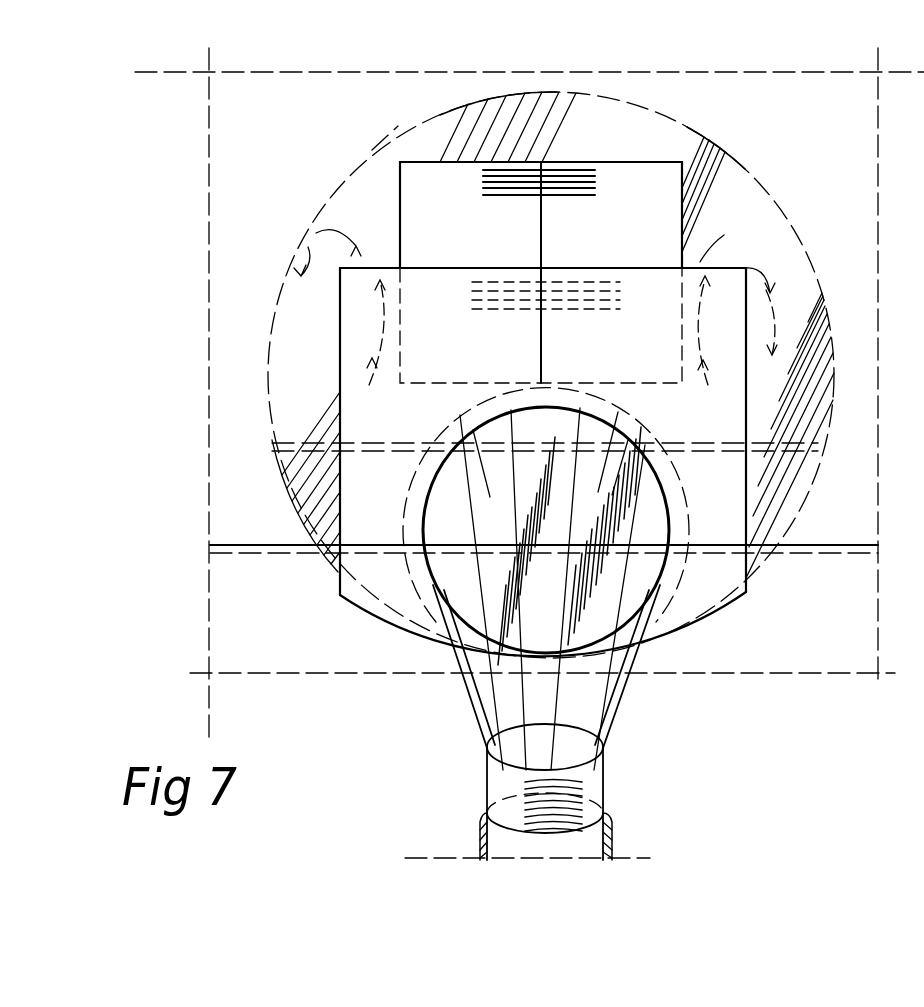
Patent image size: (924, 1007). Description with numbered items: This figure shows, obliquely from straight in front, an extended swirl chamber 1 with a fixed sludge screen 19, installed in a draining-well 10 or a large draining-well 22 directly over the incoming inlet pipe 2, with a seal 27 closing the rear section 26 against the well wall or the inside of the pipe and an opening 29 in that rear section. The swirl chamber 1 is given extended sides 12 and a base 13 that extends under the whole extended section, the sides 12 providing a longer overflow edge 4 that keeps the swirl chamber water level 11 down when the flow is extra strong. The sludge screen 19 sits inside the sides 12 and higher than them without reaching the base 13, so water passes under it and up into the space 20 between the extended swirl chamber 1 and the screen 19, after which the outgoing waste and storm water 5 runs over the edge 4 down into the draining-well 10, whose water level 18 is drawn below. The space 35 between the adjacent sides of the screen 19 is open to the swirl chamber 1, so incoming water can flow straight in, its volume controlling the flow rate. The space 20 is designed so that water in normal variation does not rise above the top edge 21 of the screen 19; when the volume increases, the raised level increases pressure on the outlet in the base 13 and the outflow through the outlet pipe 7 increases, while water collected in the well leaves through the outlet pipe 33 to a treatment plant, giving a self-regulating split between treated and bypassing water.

The swirl chamber 1 is at (476, 518).
The inlet for water to draining-well, pipe 2 is at (357, 190).
The overflow edge 4 is at (745, 268).
The outgoing waste and storm water 5 is at (308, 247).
The outlet pipe 7 is at (590, 782).
The draining-well 10 is at (712, 97).
The swirl chamber water level 11 is at (386, 412).
The swirl chamber extended sides 12 is at (340, 372).
The swirl chamber base 13 is at (683, 623).
The water level in draining-well 18 is at (268, 545).
The sludge screen 19 is at (400, 197).
The space between extended swirl chamber and sludge screen 20 is at (357, 318).
The top edge of sludge screen 21 is at (430, 162).
The large draining-well 22 is at (542, 765).
The rear section with fixings 26 is at (530, 120).
The seal for rear section 27 is at (385, 140).
The opening in rear section 29 is at (670, 468).
The outlet pipe from draining-well 33 is at (607, 845).
The space between sides of sludge screen 35 is at (575, 232).